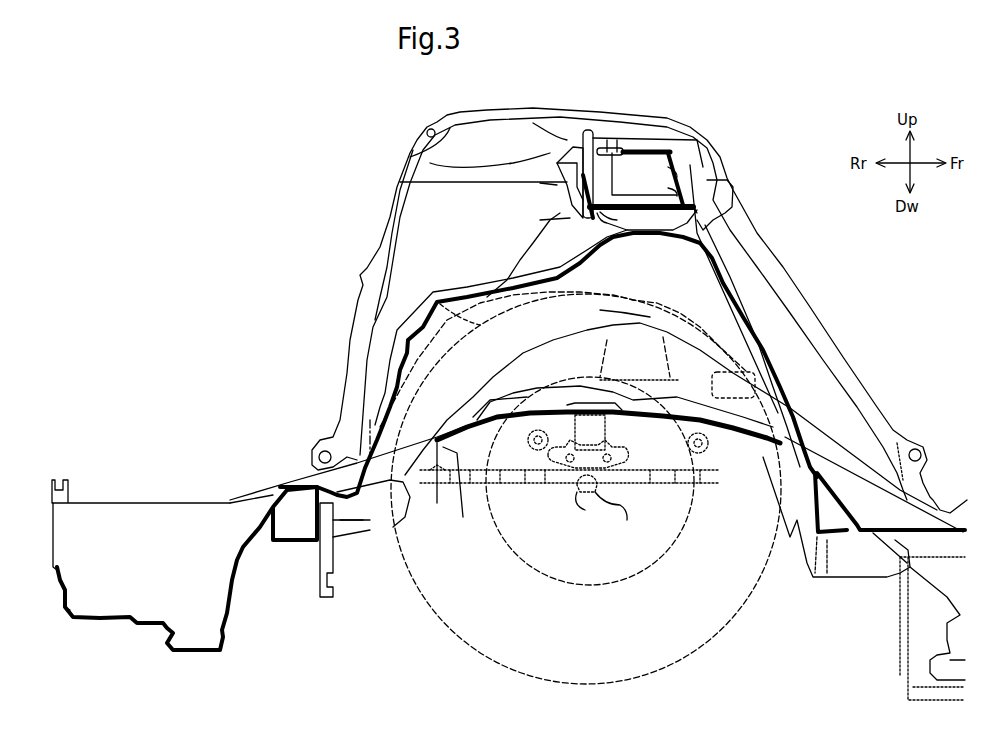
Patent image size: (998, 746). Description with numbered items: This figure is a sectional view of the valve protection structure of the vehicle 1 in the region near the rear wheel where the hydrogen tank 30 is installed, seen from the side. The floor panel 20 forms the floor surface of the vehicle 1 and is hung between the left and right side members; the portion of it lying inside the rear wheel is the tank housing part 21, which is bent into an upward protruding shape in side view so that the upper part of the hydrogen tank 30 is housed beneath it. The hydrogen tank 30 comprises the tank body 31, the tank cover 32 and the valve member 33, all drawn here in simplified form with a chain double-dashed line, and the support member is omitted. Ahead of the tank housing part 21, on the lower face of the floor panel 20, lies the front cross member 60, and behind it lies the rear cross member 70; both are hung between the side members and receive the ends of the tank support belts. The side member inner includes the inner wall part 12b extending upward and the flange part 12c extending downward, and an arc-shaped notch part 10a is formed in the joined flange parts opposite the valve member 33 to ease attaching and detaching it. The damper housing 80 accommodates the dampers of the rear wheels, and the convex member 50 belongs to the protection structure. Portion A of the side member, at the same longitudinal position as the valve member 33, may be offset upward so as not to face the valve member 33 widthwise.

The vehicle 1 is at (372, 128).
The floor panel 20 is at (465, 280).
The tank housing part 21 is at (449, 314).
The damper housing 80 is at (433, 207).
The notch part 10a is at (583, 478).
The inner wall part 12b is at (440, 495).
The flange part 12c is at (460, 500).
The hydrogen tank 30 is at (530, 690).
The tank body 31 is at (475, 652).
The tank cover 32 is at (580, 588).
The valve member 33 is at (598, 500).
The convex member 50 is at (665, 503).
The front cross member 60 is at (837, 540).
The rear cross member 70 is at (292, 545).
The portion A is at (523, 388).